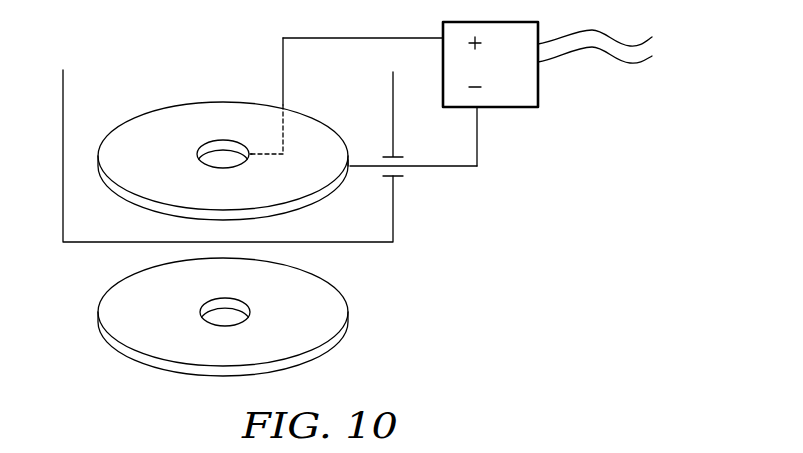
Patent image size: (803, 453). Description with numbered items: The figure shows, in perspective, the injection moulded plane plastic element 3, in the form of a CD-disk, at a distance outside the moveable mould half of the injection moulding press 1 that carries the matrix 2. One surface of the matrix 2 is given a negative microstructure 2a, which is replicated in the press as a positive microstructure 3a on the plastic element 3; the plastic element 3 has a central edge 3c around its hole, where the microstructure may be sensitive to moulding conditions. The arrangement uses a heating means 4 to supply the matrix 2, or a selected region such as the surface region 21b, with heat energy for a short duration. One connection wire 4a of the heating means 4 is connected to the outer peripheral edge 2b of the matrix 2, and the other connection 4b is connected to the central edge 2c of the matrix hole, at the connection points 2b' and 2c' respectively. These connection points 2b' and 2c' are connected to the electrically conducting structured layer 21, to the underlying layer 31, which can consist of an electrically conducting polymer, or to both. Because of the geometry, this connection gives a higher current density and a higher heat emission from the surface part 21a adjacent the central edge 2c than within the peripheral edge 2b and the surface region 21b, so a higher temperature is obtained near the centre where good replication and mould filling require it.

The injection moulding press 1 is at (425, 232).
The matrix 2 is at (283, 130).
The piezoelectric plate 21 is at (223, 124).
The surface part 21a is at (208, 135).
The surface region 21b is at (253, 201).
The negative microstructure 2a is at (328, 170).
The outer peripheral edge 2b is at (370, 152).
The connection point 2b' is at (350, 127).
The central edge 2c is at (169, 136).
The connection point 2c' is at (223, 101).
The plastic element 3 is at (246, 290).
The positive microstructure 3a is at (302, 306).
The central edge 3c is at (200, 312).
The layer 31 is at (137, 205).
The heating means 4 is at (523, 107).
The connection wire 4a is at (477, 143).
The connection 4b is at (402, 38).